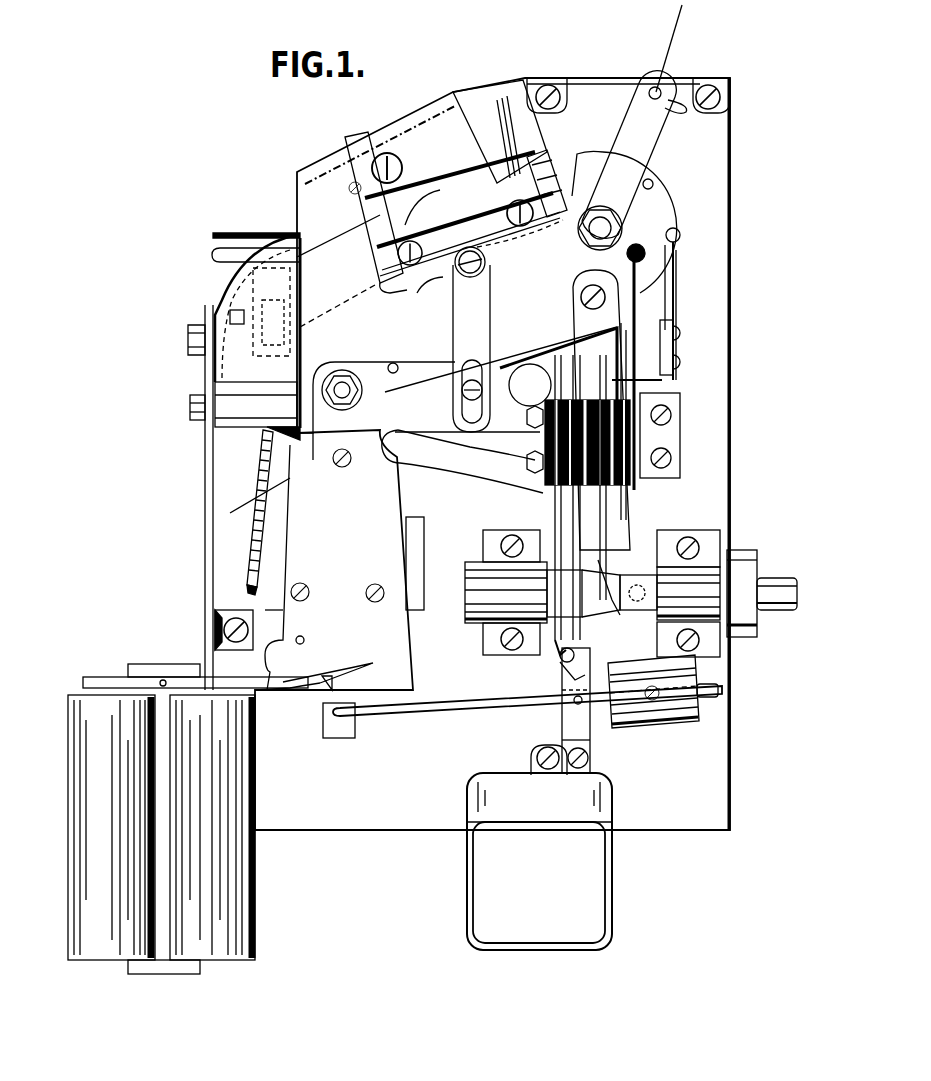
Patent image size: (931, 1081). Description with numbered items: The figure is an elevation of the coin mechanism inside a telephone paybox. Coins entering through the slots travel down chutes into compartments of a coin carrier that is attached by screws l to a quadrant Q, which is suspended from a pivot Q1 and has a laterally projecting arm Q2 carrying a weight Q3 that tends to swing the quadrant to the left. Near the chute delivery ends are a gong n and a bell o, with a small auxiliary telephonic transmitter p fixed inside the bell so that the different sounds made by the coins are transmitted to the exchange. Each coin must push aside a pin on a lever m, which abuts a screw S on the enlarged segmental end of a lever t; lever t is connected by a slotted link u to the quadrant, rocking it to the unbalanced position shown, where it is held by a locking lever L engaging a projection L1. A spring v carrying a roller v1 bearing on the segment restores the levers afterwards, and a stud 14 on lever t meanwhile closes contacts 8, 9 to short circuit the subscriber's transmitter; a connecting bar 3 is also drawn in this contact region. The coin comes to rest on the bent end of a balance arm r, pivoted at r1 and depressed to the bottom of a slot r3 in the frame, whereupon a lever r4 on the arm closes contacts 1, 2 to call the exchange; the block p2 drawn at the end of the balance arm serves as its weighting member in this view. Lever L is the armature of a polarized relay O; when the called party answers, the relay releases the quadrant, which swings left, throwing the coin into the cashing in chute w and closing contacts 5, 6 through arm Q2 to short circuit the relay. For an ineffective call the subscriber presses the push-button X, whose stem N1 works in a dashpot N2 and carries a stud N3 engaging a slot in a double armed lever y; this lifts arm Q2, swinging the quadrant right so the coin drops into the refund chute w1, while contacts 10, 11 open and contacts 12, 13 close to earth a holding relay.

The auxiliary telephonic transmitter p is at (233, 283).
The bell o is at (227, 283).
The pivot Q1 is at (330, 383).
The laterally projecting arm Q2 is at (380, 390).
The weight Q3 is at (660, 330).
The quadrant Q is at (280, 620).
The screws l is at (330, 458).
The cashing in chute w is at (230, 522).
The gong n is at (250, 530).
The polarized relay O is at (95, 758).
The locking lever L is at (292, 688).
The projection L1 is at (343, 683).
The balance arm r is at (487, 703).
The pivot r1 is at (578, 700).
The slot r3 is at (337, 733).
The lever r4 is at (565, 680).
The refund chute w1 is at (510, 935).
The contact 1 is at (557, 508).
The contact 2 is at (557, 520).
The connecting bar 3 is at (640, 380).
The contact 5 is at (513, 362).
The contact 6 is at (528, 368).
The contact 8 is at (628, 366).
The contact 9 is at (605, 270).
The contact 10 is at (605, 545).
The contact 11 is at (618, 598).
The contact 12 is at (560, 490).
The contact 13 is at (590, 495).
The stud 14 is at (660, 256).
The double armed lever y is at (473, 463).
The stem N1 is at (655, 550).
The dashpot N2 is at (475, 605).
The stud N3 is at (662, 594).
The push-button X is at (772, 590).
The block p2 is at (680, 707).
The slotted link u is at (480, 312).
The spring v is at (675, 305).
The roller v1 is at (685, 237).
The lever t is at (650, 218).
The screw S is at (660, 182).
The lever m is at (630, 118).